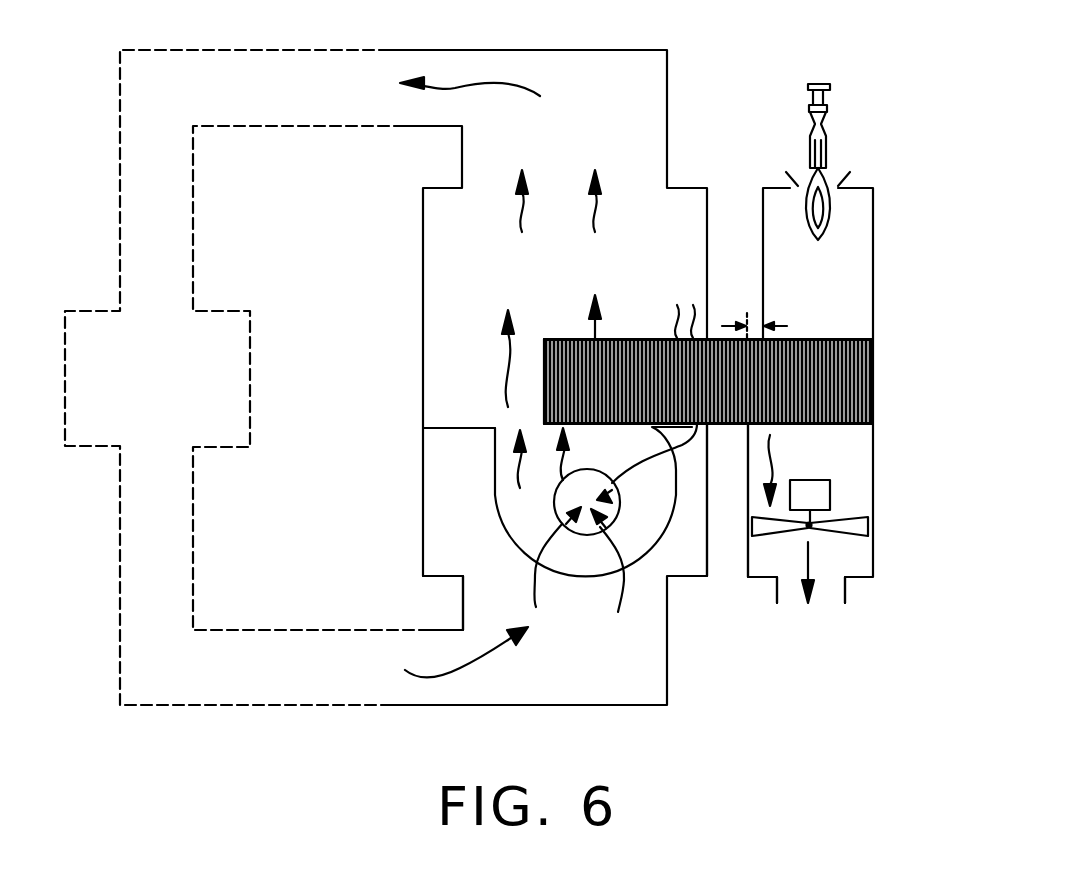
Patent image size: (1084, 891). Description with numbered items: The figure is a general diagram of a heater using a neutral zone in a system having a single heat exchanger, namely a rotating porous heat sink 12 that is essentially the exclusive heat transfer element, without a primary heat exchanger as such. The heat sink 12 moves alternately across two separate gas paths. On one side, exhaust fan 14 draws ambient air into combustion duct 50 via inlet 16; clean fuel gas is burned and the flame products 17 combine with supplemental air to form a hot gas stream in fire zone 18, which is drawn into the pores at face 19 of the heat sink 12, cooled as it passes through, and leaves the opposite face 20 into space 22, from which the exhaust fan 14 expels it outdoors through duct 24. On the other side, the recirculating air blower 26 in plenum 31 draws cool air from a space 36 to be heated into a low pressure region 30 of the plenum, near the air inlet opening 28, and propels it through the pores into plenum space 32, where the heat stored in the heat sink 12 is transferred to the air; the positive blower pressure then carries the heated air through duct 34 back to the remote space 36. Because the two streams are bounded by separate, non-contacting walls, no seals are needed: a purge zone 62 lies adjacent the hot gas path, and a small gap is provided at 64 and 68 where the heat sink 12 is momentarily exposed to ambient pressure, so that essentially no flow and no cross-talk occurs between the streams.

The rotating porous heat sink 12 is at (875, 375).
The exhaust fan 14 is at (862, 537).
The inlet 16 is at (835, 176).
The flame products 17 is at (828, 222).
The hot gas stream 18 is at (818, 270).
The face of heat sink 19 is at (828, 338).
The opposite face of heat sink 20 is at (830, 425).
The space downstream of heat sink 22 is at (807, 455).
The duct 24 is at (845, 599).
The recirculating air blower 26 is at (495, 477).
The air inlet opening 28 is at (430, 622).
The low pressure region of plenum 30 is at (567, 610).
The plenum 31 is at (422, 393).
The plenum space 32 is at (592, 140).
The duct 34 is at (430, 50).
The space to be heated 36 is at (223, 380).
The combustion duct 50 is at (762, 236).
The purge zone 62 is at (757, 325).
The gap at hot gas inlet face 64 is at (745, 308).
The gap at outlet face 68 is at (740, 469).